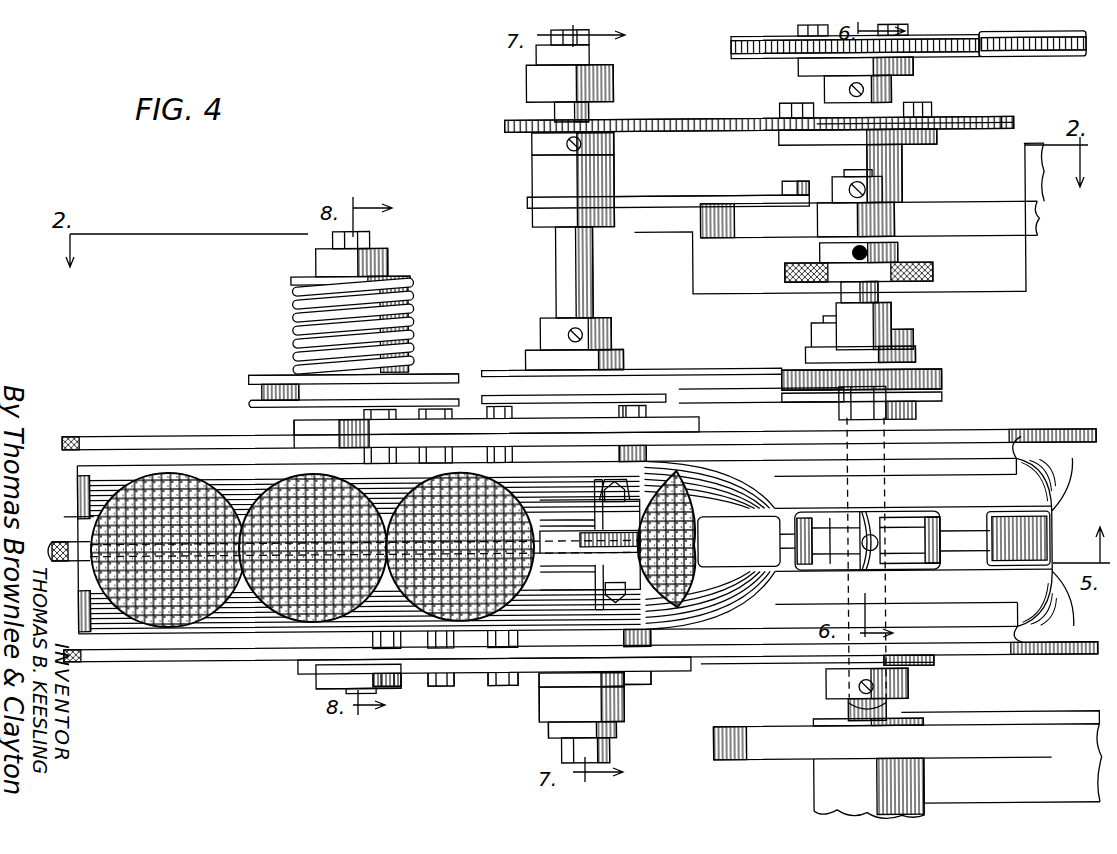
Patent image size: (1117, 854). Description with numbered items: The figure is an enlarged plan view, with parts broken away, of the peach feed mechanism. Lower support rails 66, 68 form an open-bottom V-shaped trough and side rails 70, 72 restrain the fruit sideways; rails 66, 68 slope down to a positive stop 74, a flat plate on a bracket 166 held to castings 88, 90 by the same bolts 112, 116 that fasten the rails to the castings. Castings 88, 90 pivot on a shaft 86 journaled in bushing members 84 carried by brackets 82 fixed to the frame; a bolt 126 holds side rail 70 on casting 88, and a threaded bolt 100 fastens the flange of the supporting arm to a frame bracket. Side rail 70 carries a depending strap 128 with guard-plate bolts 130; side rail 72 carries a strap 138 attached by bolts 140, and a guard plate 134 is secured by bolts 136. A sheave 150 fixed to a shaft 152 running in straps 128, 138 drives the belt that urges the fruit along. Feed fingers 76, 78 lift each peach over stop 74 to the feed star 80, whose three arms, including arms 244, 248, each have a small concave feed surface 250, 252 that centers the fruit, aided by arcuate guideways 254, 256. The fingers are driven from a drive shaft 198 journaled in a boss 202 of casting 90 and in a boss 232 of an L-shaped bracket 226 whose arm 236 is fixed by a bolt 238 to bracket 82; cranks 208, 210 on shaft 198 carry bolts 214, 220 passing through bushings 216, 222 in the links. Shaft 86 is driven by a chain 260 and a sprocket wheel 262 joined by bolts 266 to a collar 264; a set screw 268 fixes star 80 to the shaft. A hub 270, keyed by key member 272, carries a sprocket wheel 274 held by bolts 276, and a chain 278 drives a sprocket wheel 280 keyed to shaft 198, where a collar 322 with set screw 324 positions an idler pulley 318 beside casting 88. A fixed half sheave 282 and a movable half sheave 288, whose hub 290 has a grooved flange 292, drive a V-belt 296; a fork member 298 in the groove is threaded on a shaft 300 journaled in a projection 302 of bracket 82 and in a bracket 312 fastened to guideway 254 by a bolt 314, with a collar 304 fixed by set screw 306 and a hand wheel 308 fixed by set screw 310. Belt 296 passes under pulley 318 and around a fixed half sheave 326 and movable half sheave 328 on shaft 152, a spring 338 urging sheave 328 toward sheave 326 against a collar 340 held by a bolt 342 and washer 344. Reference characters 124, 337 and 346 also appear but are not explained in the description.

The support rail 66 is at (68, 530).
The support rail 68 is at (95, 630).
The side rail 70 is at (74, 434).
The side rail 72 is at (105, 658).
The positive stop 74 is at (600, 575).
The feed finger 76 is at (545, 575).
The feed finger 78 is at (535, 500).
The feed star 80 is at (909, 572).
The bracket 82 is at (748, 235).
The bushing member 84 is at (812, 778).
The shaft 86 is at (912, 37).
The casting 88 is at (820, 405).
The casting 90 is at (774, 678).
The threaded bolt 100 is at (72, 526).
The bolt 112 is at (610, 500).
The bolt 116 is at (615, 495).
The flange plate 124 is at (553, 440).
The bolt 126 is at (465, 396).
The depending strap 128 is at (300, 425).
The bolt 130 is at (405, 405).
The guard plate 134 is at (560, 722).
The bolt 136 is at (525, 685).
The depending strap 138 is at (318, 672).
The bolt 140 is at (437, 685).
The sheave 150 is at (262, 500).
The shaft 152 is at (340, 692).
The bracket 166 is at (560, 580).
The drive shaft 198 is at (558, 108).
The boss 202 is at (538, 680).
The crank 208 is at (615, 78).
The crank 210 is at (623, 705).
The bolt 214 is at (605, 60).
The bushing 216 is at (540, 60).
The bolt 220 is at (610, 760).
The bushing 222 is at (615, 735).
The bracket 226 is at (525, 211).
The boss 232 is at (535, 182).
The arm 236 is at (655, 197).
The bolt 238 is at (785, 190).
The arm 244 is at (828, 555).
The arm 248 is at (950, 525).
The feed surface 250 is at (760, 548).
The concave surface 252 is at (870, 530).
The guideway 254 is at (1045, 462).
The guideway 256 is at (1025, 630).
The chain 260 is at (1028, 62).
The sprocket wheel 262 is at (740, 62).
The collar 264 is at (918, 70).
The bolt 266 is at (815, 55).
The set screw 268 is at (876, 547).
The hub 270 is at (940, 140).
The key member 272 is at (795, 510).
The sprocket wheel 274 is at (1000, 120).
The bolt 276 is at (935, 112).
The chain 278 is at (700, 108).
The sprocket wheel 280 is at (535, 152).
The first half sheave 282 is at (925, 400).
The second half sheave 288 is at (920, 365).
The hub 290 is at (830, 325).
The flange 292 is at (813, 340).
The V-belt 296 is at (275, 380).
The fork member 298 is at (895, 318).
The shaft 300 is at (885, 290).
The projection 302 is at (900, 225).
The collar 304 is at (880, 195).
The set screw 306 is at (890, 180).
The hand wheel 308 is at (935, 275).
The set screw 310 is at (900, 246).
The bracket 312 is at (890, 410).
The bolt 314 is at (940, 380).
The idler pulley 318 is at (622, 360).
The collar 322 is at (542, 332).
The set screw 324 is at (582, 330).
The fixed half sheave 326 is at (252, 400).
The movable half sheave 328 is at (455, 362).
The spring rod 337 is at (410, 321).
The spring 338 is at (415, 295).
The collar 340 is at (400, 260).
The bolt 342 is at (375, 237).
The washer 344 is at (392, 252).
The balls 346 is at (460, 610).